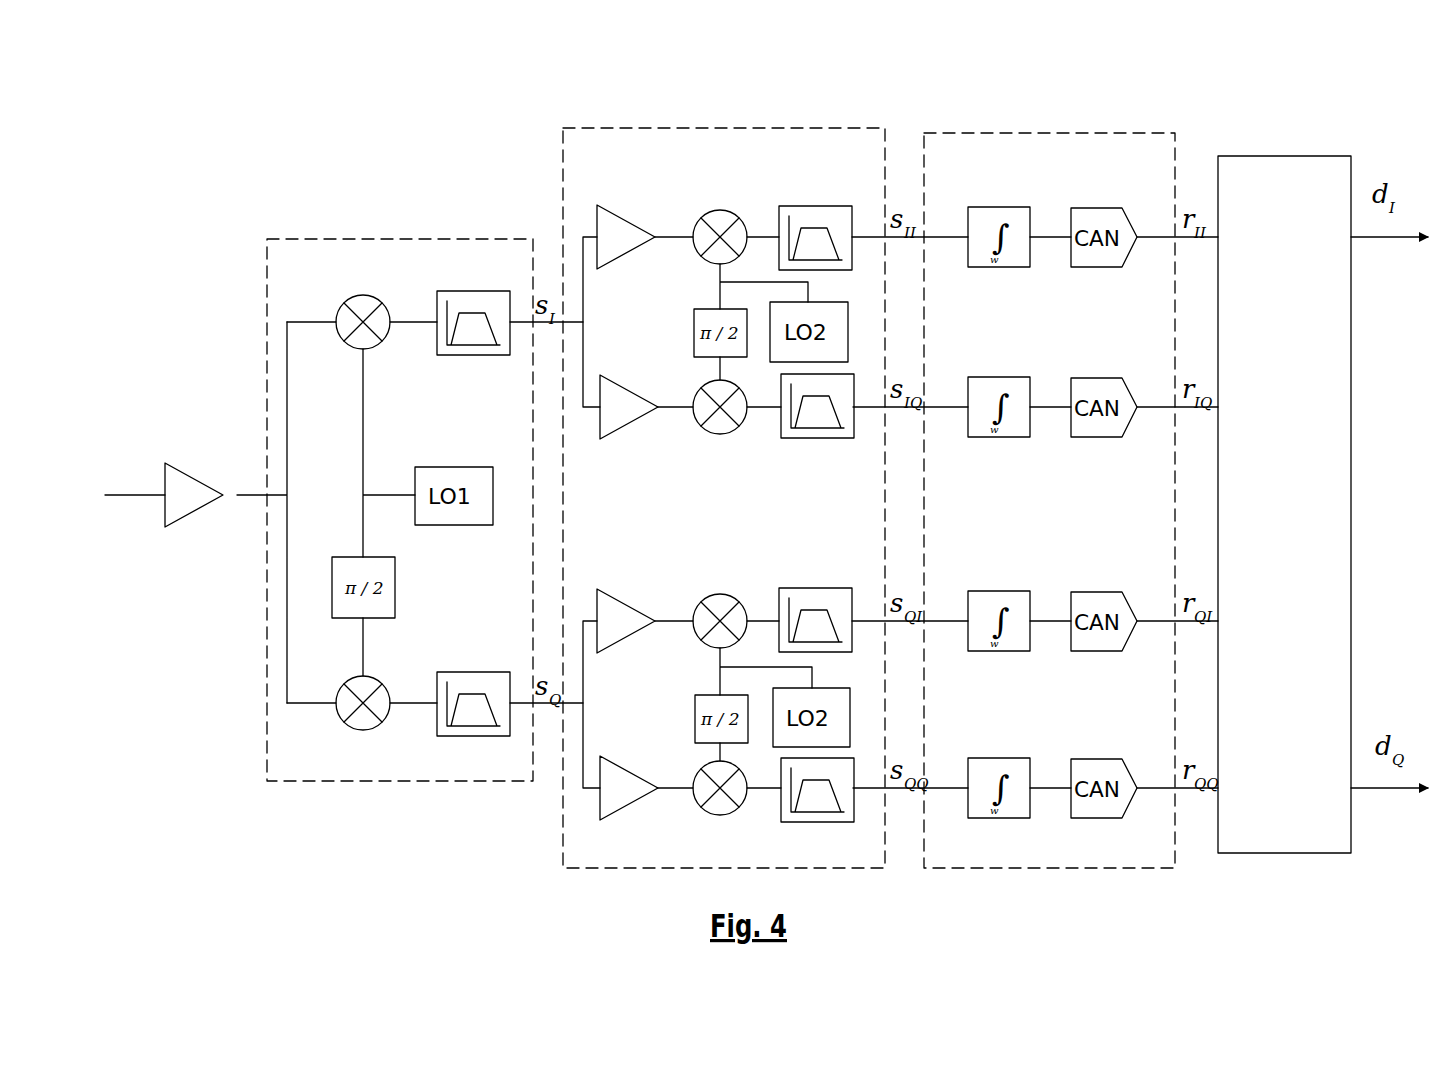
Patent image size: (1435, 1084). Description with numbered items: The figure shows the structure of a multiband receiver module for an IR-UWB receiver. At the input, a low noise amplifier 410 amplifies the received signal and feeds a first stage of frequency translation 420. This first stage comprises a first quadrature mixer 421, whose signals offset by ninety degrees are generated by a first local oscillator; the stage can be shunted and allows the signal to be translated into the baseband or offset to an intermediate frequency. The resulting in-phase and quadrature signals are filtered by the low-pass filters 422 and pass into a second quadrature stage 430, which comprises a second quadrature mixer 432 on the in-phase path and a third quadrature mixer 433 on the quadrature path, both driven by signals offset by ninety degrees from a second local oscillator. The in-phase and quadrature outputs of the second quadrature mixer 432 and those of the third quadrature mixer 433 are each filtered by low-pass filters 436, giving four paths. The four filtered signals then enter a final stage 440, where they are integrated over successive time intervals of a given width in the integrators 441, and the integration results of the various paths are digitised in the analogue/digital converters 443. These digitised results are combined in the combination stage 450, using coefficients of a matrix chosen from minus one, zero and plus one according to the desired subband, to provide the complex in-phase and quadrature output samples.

The low noise amplifier 410 is at (193, 520).
The first stage of frequency translation 420 is at (385, 238).
The first quadrature mixer 421 is at (335, 262).
The low-pass filters 422 is at (463, 290).
The second quadrature stage 430 is at (765, 127).
The second quadrature mixer 432 is at (642, 178).
The third quadrature mixer 433 is at (623, 846).
The low-pass filters 436 is at (825, 205).
The integration and digitization stage 440 is at (1048, 133).
The integrators 441 is at (972, 205).
The analogue/digital converters 443 is at (1113, 208).
The combination stage 450 is at (1275, 155).